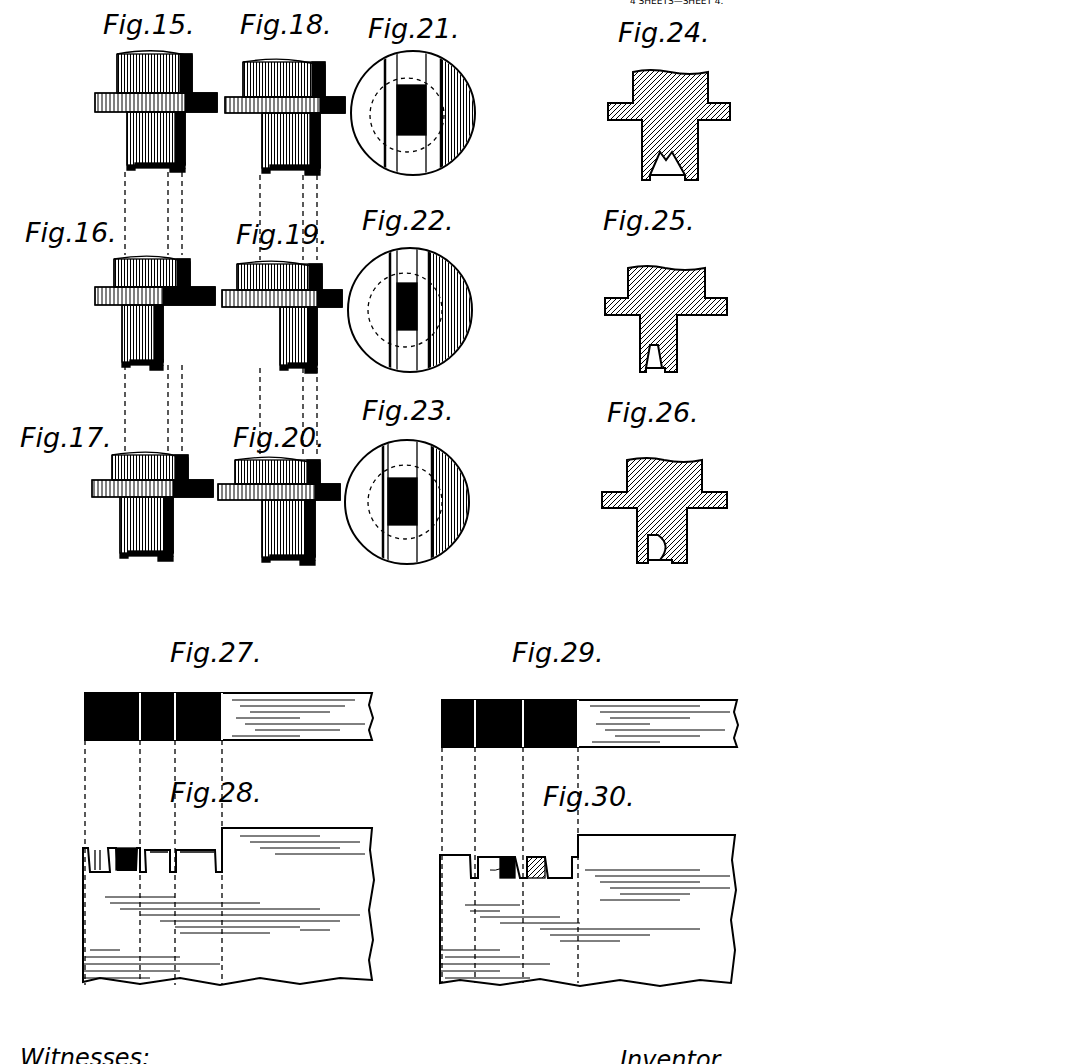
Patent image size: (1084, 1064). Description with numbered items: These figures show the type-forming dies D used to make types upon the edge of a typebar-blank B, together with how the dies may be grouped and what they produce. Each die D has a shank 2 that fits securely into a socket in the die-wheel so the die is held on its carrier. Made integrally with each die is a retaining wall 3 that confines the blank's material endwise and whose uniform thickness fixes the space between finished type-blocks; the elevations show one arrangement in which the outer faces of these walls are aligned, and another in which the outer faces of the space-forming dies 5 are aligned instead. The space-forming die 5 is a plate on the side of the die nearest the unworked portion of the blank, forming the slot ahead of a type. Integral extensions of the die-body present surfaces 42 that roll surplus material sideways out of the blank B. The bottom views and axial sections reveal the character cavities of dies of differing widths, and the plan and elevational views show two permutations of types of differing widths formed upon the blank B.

In FIG. 15, the shank 2 is at (192, 70).
In FIG. 18, the shank 2 is at (243, 68).
In FIG. 16, the shank 2 is at (150, 258).
In FIG. 19, the shank 2 is at (268, 282).
In FIG. 17, the shank 2 is at (188, 470).
In FIG. 20, the shank 2 is at (235, 466).
In FIG. 24, the shank 2 is at (633, 88).
In FIG. 25, the shank 2 is at (628, 281).
In FIG. 26, the shank 2 is at (627, 470).
In FIG. 15, the retaining wall 3 is at (127, 166).
In FIG. 18, the retaining wall 3 is at (262, 168).
In FIG. 16, the retaining wall 3 is at (122, 362).
In FIG. 19, the retaining wall 3 is at (280, 366).
In FIG. 17, the retaining wall 3 is at (120, 554).
In FIG. 20, the retaining wall 3 is at (262, 558).
In FIG. 21, the retaining wall 3 is at (386, 165).
In FIG. 22, the retaining wall 3 is at (393, 348).
In FIG. 23, the retaining wall 3 is at (383, 550).
In FIG. 24, the retaining wall 3 is at (645, 180).
In FIG. 25, the retaining wall 3 is at (640, 372).
In FIG. 26, the retaining wall 3 is at (637, 563).
In FIG. 15, the space-forming die 5 is at (178, 170).
In FIG. 18, the space-forming die 5 is at (312, 176).
In FIG. 16, the space-forming die 5 is at (156, 370).
In FIG. 19, the space-forming die 5 is at (308, 373).
In FIG. 17, the space-forming die 5 is at (165, 558).
In FIG. 20, the space-forming die 5 is at (306, 566).
In FIG. 21, the space-forming die 5 is at (432, 143).
In FIG. 22, the space-forming die 5 is at (420, 352).
In FIG. 23, the space-forming die 5 is at (425, 543).
In FIG. 24, the space-forming die 5 is at (698, 180).
In FIG. 25, the space-forming die 5 is at (677, 372).
In FIG. 26, the space-forming die 5 is at (687, 565).
In FIG. 15, the type-forming die D is at (185, 150).
In FIG. 18, the type-forming die D is at (262, 145).
In FIG. 16, the type-forming die D is at (190, 265).
In FIG. 19, the type-forming die D is at (237, 266).
In FIG. 17, the type-forming die D is at (173, 527).
In FIG. 20, the type-forming die D is at (262, 520).
In FIG. 21, the type-forming die D is at (372, 146).
In FIG. 22, the type-forming die D is at (363, 283).
In FIG. 23, the type-forming die D is at (445, 468).
In FIG. 24, the type-forming die D is at (698, 147).
In FIG. 25, the type-forming die D is at (677, 343).
In FIG. 26, the type-forming die D is at (637, 518).
In FIG. 27, the type-forming die D is at (188, 693).
In FIG. 28, the type-forming die D is at (196, 848).
In FIG. 29, the type-forming die D is at (532, 700).
In FIG. 30, the type-forming die D is at (540, 857).
In FIG. 21, the integral die-body extension surface 42 is at (405, 70).
In FIG. 22, the integral die-body extension surface 42 is at (405, 258).
In FIG. 23, the integral die-body extension surface 42 is at (405, 447).
In FIG. 27, the typebar-blank B is at (229, 716).
In FIG. 28, the typebar-blank B is at (228, 906).
In FIG. 29, the typebar-blank B is at (590, 723).
In FIG. 30, the typebar-blank B is at (588, 910).